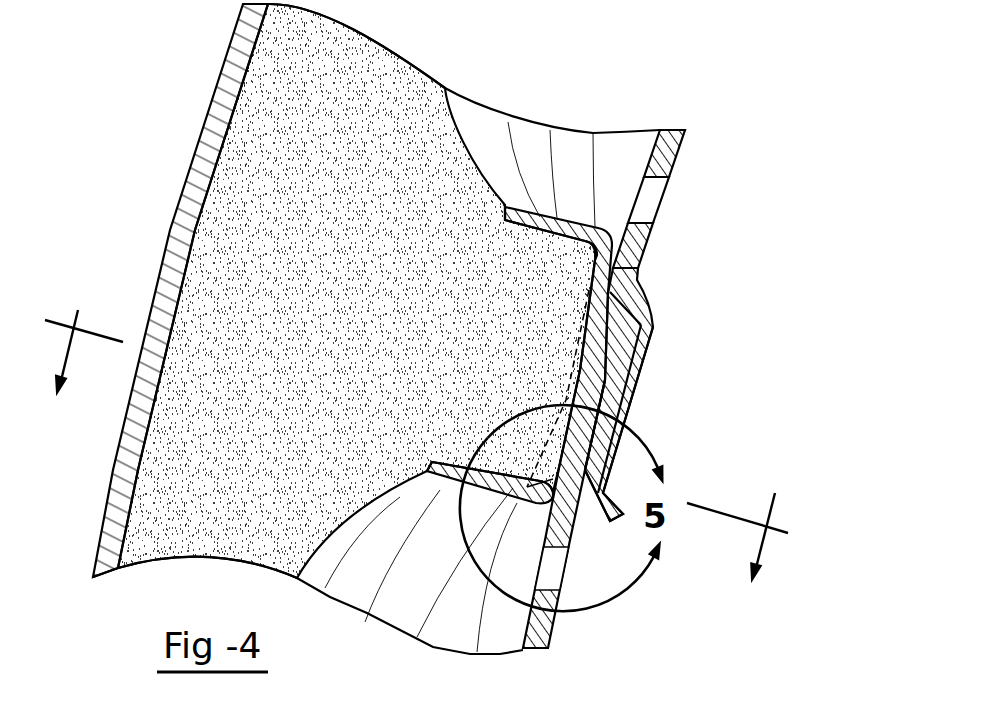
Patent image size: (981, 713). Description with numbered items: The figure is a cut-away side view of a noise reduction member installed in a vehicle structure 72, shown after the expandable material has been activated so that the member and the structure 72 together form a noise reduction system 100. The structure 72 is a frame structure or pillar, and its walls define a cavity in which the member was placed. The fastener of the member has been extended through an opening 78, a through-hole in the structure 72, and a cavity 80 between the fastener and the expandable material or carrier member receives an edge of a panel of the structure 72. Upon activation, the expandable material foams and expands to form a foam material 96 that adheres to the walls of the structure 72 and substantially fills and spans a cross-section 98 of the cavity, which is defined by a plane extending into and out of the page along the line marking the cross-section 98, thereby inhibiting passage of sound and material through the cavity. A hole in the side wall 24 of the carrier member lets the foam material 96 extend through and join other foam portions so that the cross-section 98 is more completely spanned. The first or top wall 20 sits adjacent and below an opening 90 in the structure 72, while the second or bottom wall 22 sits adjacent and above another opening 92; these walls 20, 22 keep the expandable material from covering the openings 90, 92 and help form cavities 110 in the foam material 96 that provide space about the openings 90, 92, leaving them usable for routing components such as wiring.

The first or top wall 20 is at (578, 393).
The second or bottom wall 22 is at (463, 483).
The side wall 24 is at (613, 253).
The structure 72 is at (681, 206).
The opening 78 is at (650, 394).
The cavity 80 is at (627, 338).
The opening 90 is at (652, 202).
The opening 92 is at (553, 573).
The foam material 96 is at (303, 255).
The cross-section 98 is at (85, 330).
The noise reduction system 100 is at (163, 112).
The cavities 110 is at (611, 150).